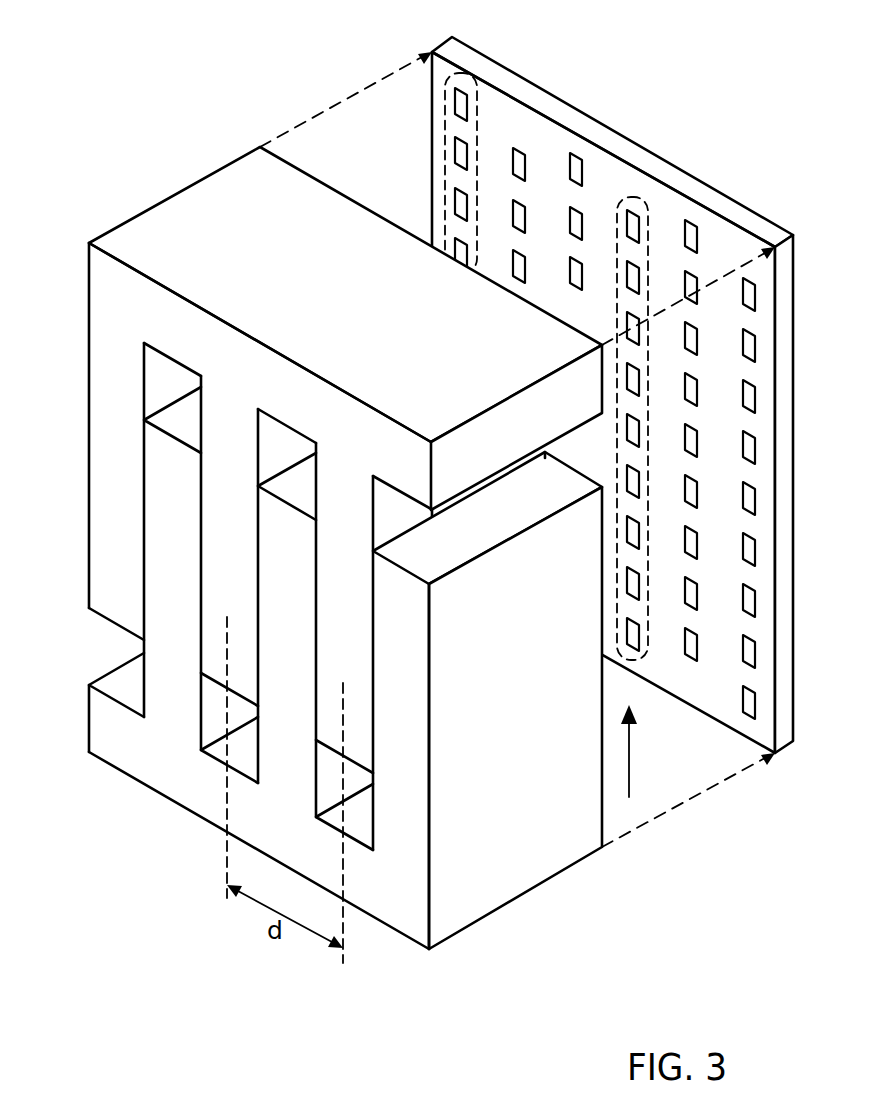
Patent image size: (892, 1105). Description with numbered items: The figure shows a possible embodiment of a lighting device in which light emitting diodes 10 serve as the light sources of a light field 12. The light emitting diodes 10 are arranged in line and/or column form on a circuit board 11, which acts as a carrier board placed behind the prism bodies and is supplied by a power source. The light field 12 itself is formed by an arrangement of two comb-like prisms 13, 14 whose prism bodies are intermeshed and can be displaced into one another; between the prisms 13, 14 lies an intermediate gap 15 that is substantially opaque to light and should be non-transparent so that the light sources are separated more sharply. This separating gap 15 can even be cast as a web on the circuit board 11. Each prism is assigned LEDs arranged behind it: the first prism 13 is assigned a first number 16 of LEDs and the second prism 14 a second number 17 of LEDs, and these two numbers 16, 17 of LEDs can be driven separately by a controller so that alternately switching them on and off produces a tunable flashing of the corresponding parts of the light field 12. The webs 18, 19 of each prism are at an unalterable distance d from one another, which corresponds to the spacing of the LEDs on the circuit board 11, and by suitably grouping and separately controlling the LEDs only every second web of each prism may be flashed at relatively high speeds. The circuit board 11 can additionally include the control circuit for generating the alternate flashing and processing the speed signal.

The light emitting diodes 10 is at (513, 152).
The circuit board 11 is at (772, 738).
The light field 12 is at (392, 897).
The first prism 13 is at (232, 192).
The second prism 14 is at (508, 870).
The intermediate gap 15 is at (141, 538).
The first number of LEDs 16 is at (445, 145).
The second number of LEDs 17 is at (642, 207).
The web 18 is at (213, 638).
The web 19 is at (327, 697).